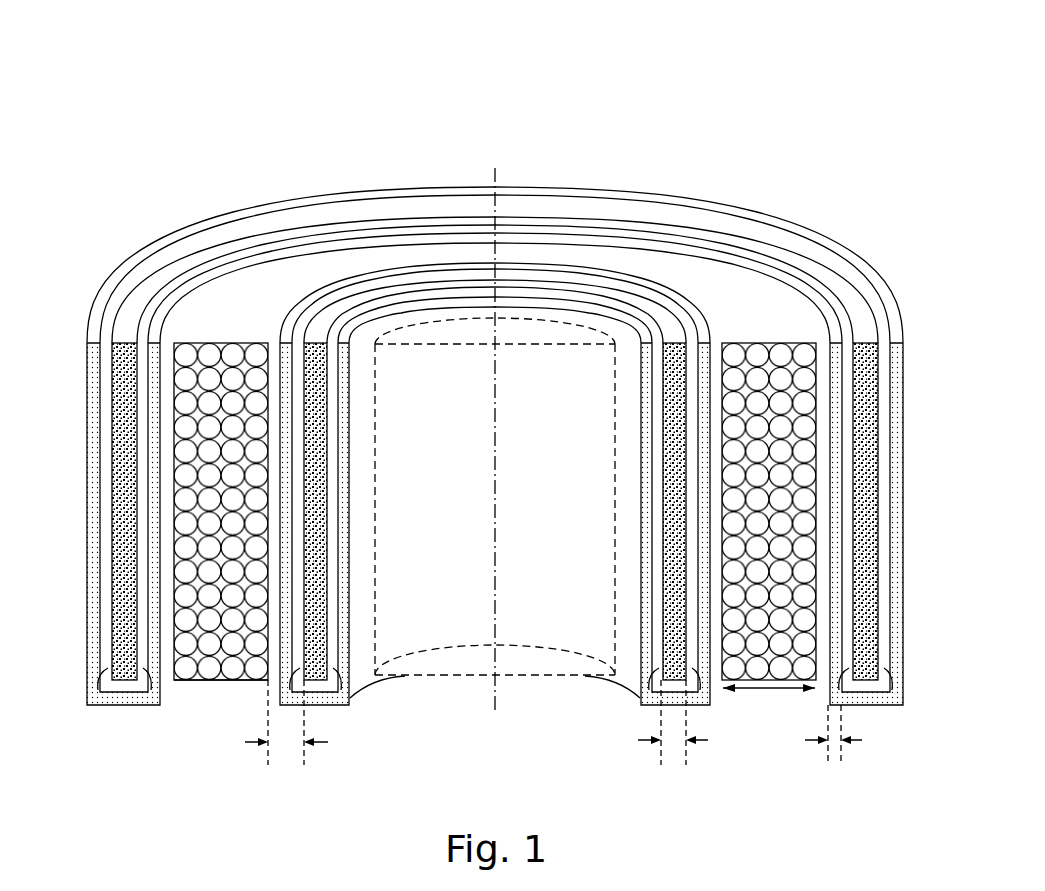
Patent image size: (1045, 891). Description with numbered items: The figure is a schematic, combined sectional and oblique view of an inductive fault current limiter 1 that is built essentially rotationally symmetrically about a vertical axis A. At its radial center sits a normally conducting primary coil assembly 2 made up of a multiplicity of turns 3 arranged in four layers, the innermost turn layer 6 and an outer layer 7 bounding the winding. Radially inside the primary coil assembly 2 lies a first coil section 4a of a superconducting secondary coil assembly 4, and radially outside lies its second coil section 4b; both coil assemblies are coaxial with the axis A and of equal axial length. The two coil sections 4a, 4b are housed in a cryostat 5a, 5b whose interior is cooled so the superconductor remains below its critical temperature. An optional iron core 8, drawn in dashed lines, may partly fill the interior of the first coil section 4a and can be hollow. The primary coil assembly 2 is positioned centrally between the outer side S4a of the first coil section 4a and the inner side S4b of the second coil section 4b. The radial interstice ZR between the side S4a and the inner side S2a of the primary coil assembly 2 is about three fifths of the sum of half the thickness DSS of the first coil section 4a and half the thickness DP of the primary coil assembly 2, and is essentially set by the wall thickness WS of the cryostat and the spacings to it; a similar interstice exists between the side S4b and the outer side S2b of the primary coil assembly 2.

The fault current limiter 1 is at (836, 150).
The primary coil assembly 2 is at (783, 370).
The turns 3 is at (210, 670).
The secondary coil assembly 4 is at (866, 410).
The first coil section 4a is at (663, 645).
The second coil section 4b is at (866, 680).
The cryostat 5a is at (350, 695).
The cryostat 5b is at (122, 698).
The innermost turn layer 6 is at (253, 668).
The outer boundary surface of particle layer 7 is at (186, 668).
The iron core 8 is at (462, 664).
The vertical axis A is at (522, 209).
The inner side of the primary coil assembly S2a is at (258, 366).
The outer side of the primary coil assembly S2b is at (180, 391).
The outer side of the first coil section S4a is at (312, 371).
The inner side of the second coil section S4b is at (133, 356).
The interstice ZR is at (296, 722).
The thickness of the primary coil assembly DP is at (769, 703).
The thickness of the first coil section DSS is at (664, 729).
The wall thickness of the cryostat WS is at (826, 740).